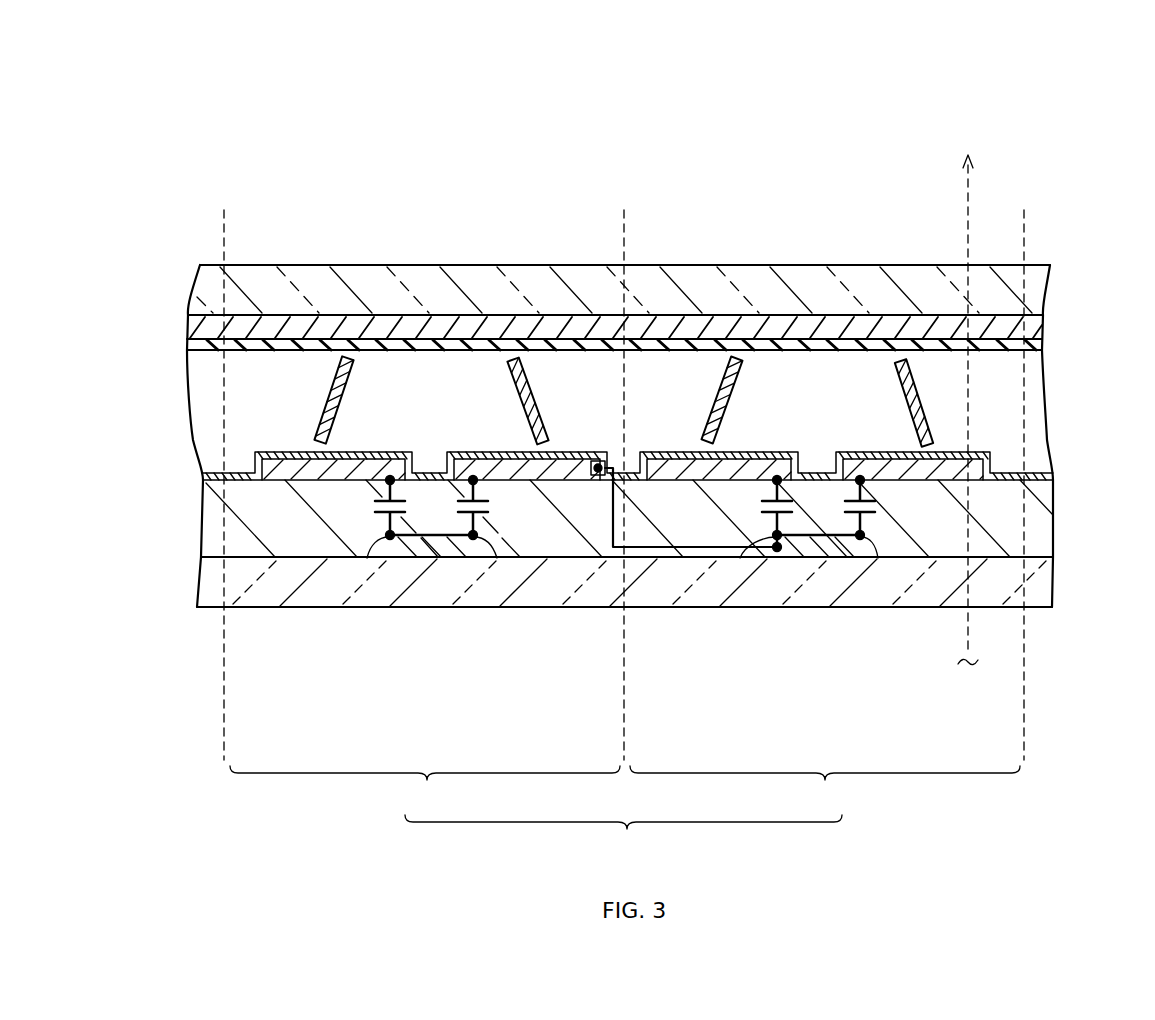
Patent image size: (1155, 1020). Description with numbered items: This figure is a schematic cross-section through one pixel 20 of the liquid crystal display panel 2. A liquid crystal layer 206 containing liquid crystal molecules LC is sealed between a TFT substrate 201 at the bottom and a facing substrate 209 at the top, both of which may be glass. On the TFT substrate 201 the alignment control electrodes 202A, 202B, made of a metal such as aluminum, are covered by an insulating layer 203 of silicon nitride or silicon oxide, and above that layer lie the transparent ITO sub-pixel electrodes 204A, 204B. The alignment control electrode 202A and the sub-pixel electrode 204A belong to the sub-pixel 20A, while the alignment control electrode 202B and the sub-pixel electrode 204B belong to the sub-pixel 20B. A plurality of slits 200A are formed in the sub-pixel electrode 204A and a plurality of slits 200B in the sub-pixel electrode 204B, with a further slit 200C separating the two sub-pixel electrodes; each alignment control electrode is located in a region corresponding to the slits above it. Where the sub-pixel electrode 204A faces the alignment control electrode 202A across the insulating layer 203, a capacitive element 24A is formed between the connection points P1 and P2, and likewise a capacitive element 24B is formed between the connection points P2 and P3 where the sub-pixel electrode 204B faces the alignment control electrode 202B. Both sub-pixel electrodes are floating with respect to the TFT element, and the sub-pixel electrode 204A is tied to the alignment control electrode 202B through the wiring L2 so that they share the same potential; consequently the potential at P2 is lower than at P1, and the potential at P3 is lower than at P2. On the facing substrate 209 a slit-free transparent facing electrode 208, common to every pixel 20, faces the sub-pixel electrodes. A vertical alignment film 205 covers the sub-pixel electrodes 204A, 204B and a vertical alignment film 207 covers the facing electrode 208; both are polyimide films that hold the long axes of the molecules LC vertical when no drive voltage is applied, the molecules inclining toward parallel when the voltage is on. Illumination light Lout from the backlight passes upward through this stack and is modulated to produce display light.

The liquid crystal display panel 2 is at (1067, 95).
The pixel 20 is at (623, 838).
The sub-pixel 20A is at (424, 510).
The sub-pixel 20B is at (827, 510).
The capacitive element 24A is at (505, 557).
The capacitive element 24B is at (903, 557).
The slit 200A is at (437, 445).
The slit 200B is at (825, 448).
The slit 200C is at (637, 443).
The TFT substrate 201 is at (1040, 583).
The alignment control electrode 202A is at (424, 545).
The alignment control electrode 202B is at (818, 548).
The insulating layer 203 is at (1045, 527).
The sub-pixel electrode 204A is at (565, 467).
The sub-pixel electrode 204B is at (950, 470).
The vertical alignment film 205 is at (1053, 477).
The liquid crystal layer 206 is at (1036, 418).
The vertical alignment film 207 is at (1033, 349).
The facing electrode 208 is at (1033, 322).
The facing substrate 209 is at (1037, 291).
The wiring L2 is at (657, 547).
The liquid crystal molecule LC is at (317, 367).
The illumination light Lout is at (969, 186).
The connection point P1 is at (501, 528).
The connection point P2 is at (885, 528).
The connection point P3 is at (866, 458).